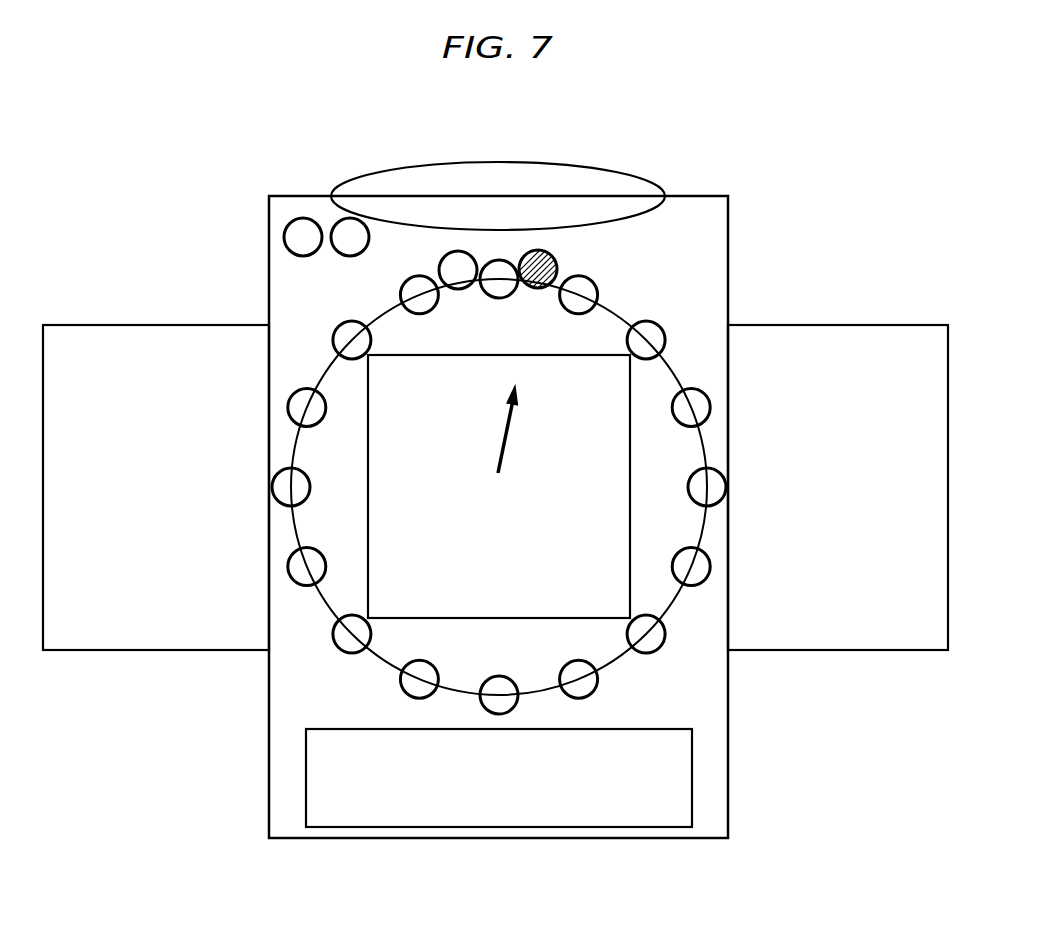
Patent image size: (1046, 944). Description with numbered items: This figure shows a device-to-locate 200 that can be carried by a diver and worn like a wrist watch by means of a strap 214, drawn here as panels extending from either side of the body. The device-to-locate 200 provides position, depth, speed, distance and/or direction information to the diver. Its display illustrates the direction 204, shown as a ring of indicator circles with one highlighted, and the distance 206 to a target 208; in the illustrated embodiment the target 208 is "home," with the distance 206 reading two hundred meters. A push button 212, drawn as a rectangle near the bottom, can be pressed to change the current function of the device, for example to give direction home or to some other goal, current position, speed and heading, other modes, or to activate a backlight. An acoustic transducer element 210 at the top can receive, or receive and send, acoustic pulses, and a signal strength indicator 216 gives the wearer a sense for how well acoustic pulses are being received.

The device-to-locate 200 is at (202, 230).
The direction 204 is at (557, 270).
The distance 206 is at (467, 495).
The target 208 is at (467, 520).
The acoustic transducer element 210 is at (616, 171).
The push button 212 is at (692, 778).
The strap 214 is at (822, 650).
The signal strength indicator 216 is at (316, 207).